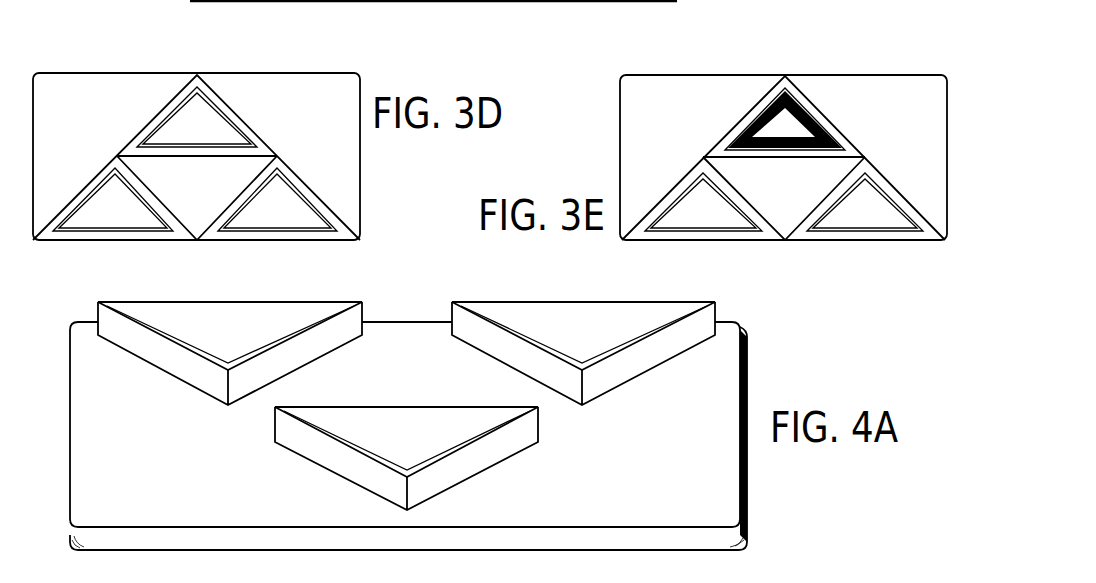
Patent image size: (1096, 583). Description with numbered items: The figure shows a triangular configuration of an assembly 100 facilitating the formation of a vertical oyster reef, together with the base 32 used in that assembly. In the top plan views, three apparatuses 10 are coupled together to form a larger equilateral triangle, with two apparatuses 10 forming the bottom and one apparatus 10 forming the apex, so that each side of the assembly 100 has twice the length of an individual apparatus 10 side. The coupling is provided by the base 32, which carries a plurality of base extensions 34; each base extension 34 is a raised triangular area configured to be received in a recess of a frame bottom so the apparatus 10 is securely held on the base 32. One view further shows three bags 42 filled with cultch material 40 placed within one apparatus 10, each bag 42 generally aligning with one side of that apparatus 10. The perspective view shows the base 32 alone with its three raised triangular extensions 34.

In FIG. 3D, the apparatus 10 is at (213, 95).
In FIG. 3E, the apparatus 10 is at (905, 263).
In FIG. 3D, the base 32 is at (335, 139).
In FIG. 3E, the base 32 is at (670, 161).
In FIG. 4A, the base 32 is at (668, 461).
In FIG. 3D, the base extension 34 is at (163, 122).
In FIG. 3E, the base extension 34 is at (692, 232).
In FIG. 4A, the base extension 34 is at (108, 324).
In FIG. 3E, the cultch material 40 is at (807, 100).
In FIG. 3E, the bag 42 is at (757, 110).
In FIG. 3D, the assembly 100 is at (138, 52).
In FIG. 3E, the assembly 100 is at (845, 58).
In FIG. 4A, the assembly 100 is at (785, 352).